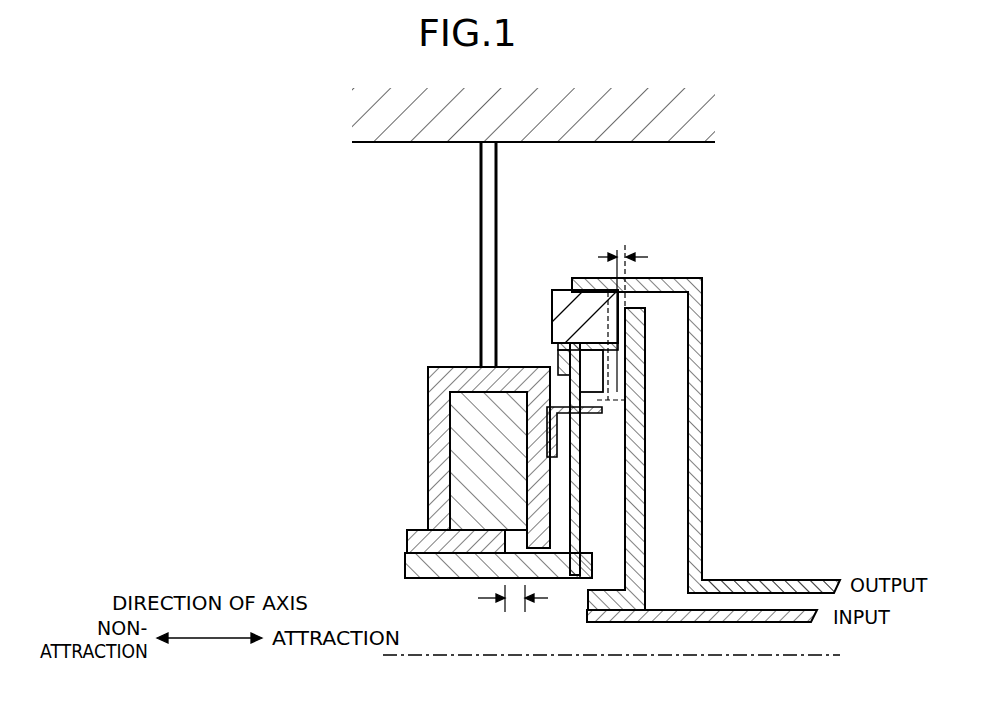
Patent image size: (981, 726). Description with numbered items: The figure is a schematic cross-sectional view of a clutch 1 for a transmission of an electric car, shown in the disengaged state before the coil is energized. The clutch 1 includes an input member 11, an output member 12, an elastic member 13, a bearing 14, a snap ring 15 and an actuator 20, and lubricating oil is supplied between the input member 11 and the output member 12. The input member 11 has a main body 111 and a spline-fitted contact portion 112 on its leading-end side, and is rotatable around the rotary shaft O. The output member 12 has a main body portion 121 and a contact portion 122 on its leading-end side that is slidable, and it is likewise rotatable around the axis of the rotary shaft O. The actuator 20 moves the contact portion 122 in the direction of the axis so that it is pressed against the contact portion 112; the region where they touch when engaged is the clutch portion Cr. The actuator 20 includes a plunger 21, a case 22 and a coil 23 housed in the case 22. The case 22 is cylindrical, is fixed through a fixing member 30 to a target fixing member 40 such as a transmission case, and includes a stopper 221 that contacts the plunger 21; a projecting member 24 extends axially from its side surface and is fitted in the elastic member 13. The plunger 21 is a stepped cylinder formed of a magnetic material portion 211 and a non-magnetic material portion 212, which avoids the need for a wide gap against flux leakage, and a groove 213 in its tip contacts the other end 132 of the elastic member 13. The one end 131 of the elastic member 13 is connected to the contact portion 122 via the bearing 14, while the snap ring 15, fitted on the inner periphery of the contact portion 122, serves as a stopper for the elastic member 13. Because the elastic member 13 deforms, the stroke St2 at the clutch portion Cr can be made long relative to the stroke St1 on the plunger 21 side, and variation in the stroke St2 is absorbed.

The clutch 1 is at (822, 171).
The target fixing member 40 is at (695, 142).
The fixing member 30 is at (481, 182).
The actuator 20 is at (457, 479).
The case 22 is at (455, 367).
The coil 23 is at (450, 462).
The stopper 221 is at (455, 505).
The plunger 21 is at (457, 588).
The magnetic material portion 211 is at (407, 540).
The non-magnetic material portion 212 is at (440, 578).
The groove 213 is at (577, 585).
The projecting member 24 is at (602, 413).
The output member 12 is at (672, 411).
The main body portion 121 is at (702, 562).
The contact portion 122 is at (552, 292).
The snap ring 15 is at (558, 340).
The elastic member 13 is at (656, 475).
The one end 131 is at (577, 343).
The other end 132 is at (590, 578).
The bearing 14 is at (572, 347).
The input member 11 is at (702, 504).
The main body 111 is at (665, 622).
The contact portion 112 is at (646, 364).
The stroke on the clutch portion side St2 is at (624, 256).
The stroke on the plunger side St1 is at (516, 612).
The clutch portion Cr is at (648, 318).
The rotary shaft O is at (838, 660).